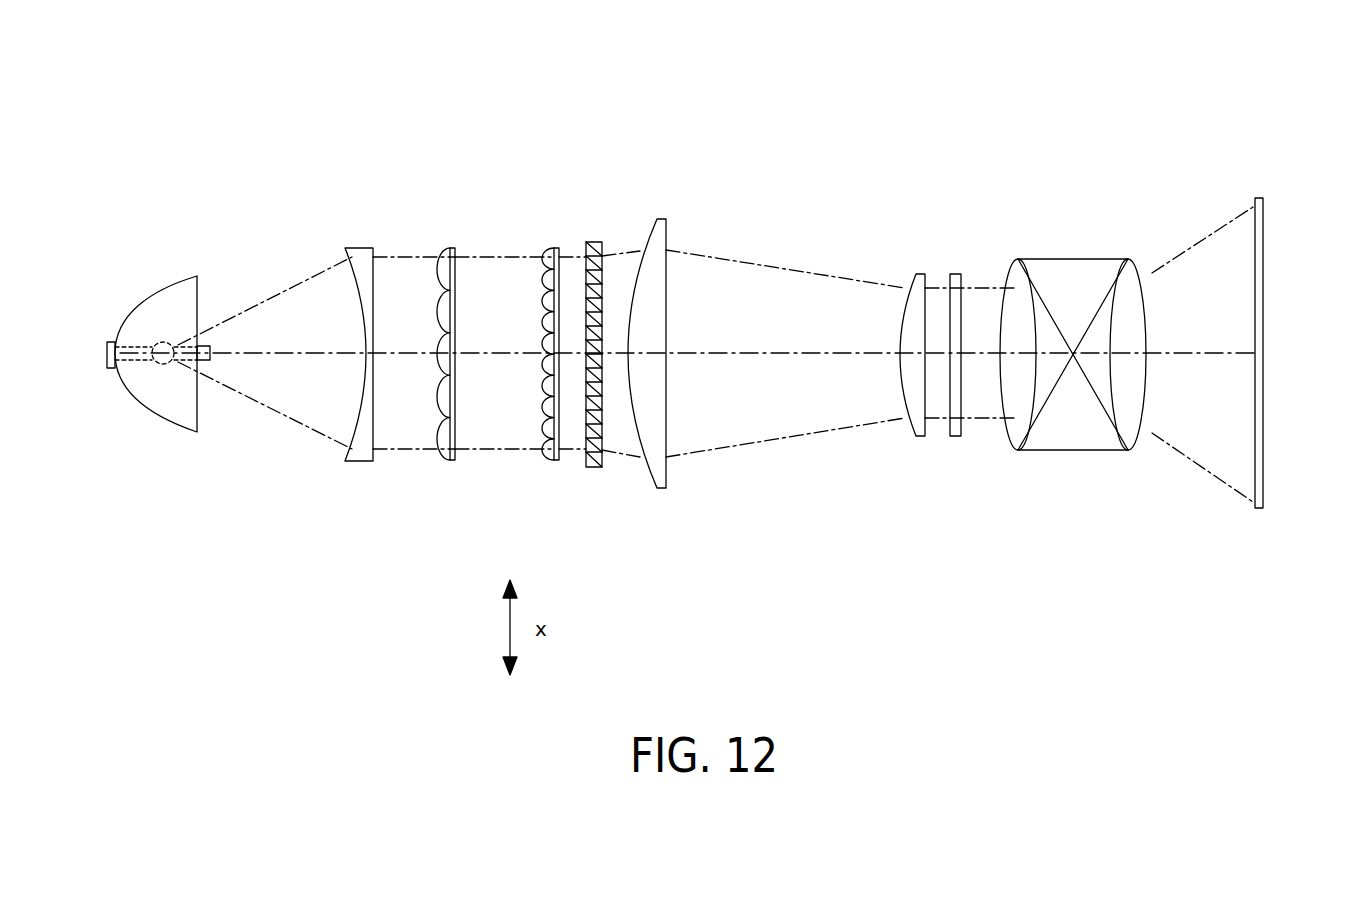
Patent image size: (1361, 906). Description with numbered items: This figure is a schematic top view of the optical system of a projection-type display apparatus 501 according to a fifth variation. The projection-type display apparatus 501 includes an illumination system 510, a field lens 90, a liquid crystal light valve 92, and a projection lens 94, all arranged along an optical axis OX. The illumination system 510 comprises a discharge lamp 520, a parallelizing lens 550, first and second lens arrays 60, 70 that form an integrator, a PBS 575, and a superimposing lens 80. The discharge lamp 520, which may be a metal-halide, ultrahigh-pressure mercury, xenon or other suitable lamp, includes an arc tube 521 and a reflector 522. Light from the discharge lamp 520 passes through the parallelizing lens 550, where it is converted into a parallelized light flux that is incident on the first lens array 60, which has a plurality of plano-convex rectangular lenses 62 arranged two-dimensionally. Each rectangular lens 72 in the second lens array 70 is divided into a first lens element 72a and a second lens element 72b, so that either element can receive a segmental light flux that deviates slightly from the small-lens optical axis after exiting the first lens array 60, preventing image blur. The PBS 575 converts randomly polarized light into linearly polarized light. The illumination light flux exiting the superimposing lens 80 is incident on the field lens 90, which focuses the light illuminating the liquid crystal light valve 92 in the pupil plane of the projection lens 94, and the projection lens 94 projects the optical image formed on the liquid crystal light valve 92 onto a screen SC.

The projection-type display apparatus 501 is at (790, 113).
The illumination system 510 is at (690, 117).
The discharge lamp 520 is at (140, 418).
The arc tube 521 is at (163, 340).
The reflector 522 is at (135, 318).
The parallelizing lens 550 is at (362, 248).
The first lens array 60 is at (436, 337).
The rectangular lens 62 is at (437, 400).
The second lens array 70 is at (515, 359).
The rectangular lens 72 is at (511, 402).
The first lens element 72a is at (540, 428).
The second lens element 72b is at (540, 475).
The PBS 575 is at (596, 242).
The superimposing lens 80 is at (664, 219).
The field lens 90 is at (920, 274).
The liquid crystal light valve 92 is at (955, 274).
The projection lens 94 is at (1113, 259).
The optical axis OX is at (752, 350).
The screen SC is at (1257, 225).